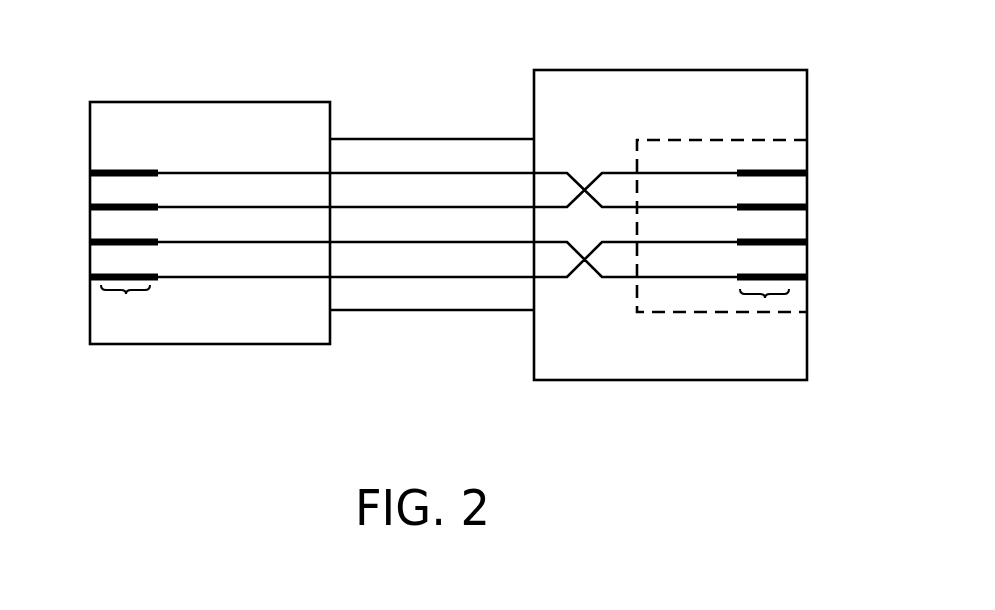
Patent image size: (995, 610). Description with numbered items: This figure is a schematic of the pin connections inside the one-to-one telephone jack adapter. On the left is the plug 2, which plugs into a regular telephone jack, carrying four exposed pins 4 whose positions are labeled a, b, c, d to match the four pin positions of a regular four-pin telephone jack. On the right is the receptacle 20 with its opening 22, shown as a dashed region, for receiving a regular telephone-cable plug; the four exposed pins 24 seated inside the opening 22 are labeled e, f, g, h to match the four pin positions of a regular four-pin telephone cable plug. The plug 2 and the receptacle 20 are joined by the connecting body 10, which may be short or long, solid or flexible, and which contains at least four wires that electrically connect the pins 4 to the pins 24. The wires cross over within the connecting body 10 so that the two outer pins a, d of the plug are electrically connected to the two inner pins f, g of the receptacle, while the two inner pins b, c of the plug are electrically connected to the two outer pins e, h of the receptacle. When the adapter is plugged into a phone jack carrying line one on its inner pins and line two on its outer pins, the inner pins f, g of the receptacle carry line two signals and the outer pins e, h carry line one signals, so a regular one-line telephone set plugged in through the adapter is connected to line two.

The plug 2 is at (202, 112).
The exposed pins 4 is at (103, 278).
The connecting body 10 is at (377, 302).
The receptacle 20 is at (774, 78).
The opening 22 is at (795, 155).
The exposed pins 24 is at (795, 271).
The outer pin position of plug a is at (86, 174).
The inner pin position of plug b is at (86, 208).
The inner pin position of plug c is at (86, 243).
The outer pin position of plug d is at (86, 278).
The outer pin position of receptacle e is at (808, 175).
The inner pin position of receptacle f is at (808, 209).
The inner pin position of receptacle g is at (808, 244).
The outer pin position of receptacle h is at (808, 279).